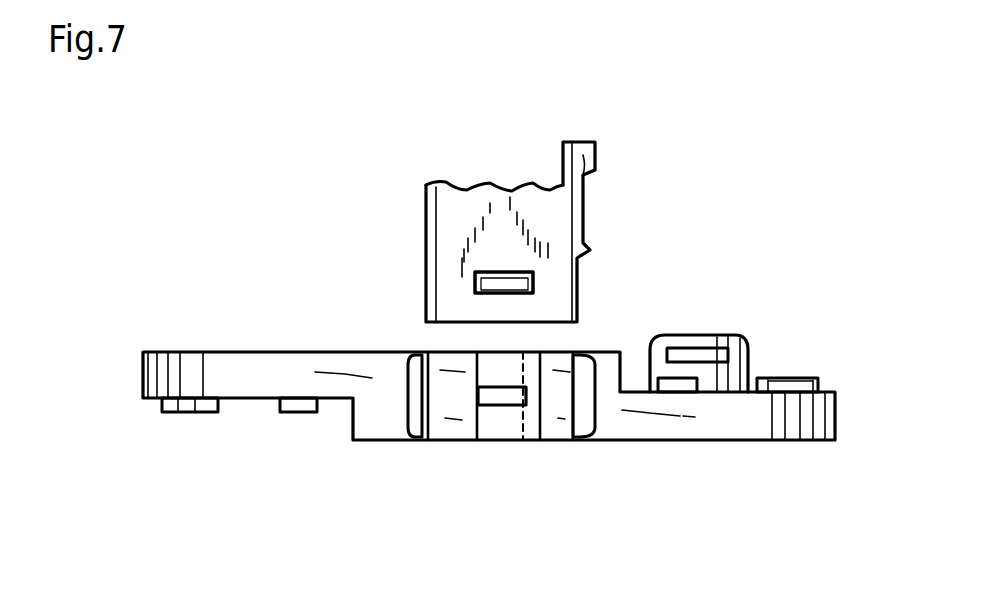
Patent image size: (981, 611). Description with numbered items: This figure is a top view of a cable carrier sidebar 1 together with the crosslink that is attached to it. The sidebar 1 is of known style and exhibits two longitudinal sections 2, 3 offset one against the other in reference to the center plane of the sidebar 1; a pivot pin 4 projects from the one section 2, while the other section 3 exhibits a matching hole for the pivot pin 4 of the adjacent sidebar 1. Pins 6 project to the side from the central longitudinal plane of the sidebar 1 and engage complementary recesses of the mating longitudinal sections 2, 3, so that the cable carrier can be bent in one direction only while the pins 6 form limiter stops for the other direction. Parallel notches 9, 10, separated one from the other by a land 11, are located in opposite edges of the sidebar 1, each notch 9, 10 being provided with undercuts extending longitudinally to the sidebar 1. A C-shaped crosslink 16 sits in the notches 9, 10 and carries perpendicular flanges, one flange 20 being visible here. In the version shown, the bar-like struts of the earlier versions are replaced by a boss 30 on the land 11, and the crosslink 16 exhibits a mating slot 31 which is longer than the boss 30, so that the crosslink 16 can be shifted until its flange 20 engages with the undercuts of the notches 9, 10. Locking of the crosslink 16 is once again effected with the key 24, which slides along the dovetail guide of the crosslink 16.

The sidebar 1 is at (393, 358).
The longitudinal section 2 is at (213, 358).
The longitudinal section 3 is at (762, 413).
The pivot pin 4 is at (728, 373).
The pin 6 is at (197, 413).
The notch 9 is at (556, 410).
The notch 10 is at (448, 410).
The land 11 is at (515, 425).
The crosslink 16 is at (493, 210).
The flange 20 is at (427, 218).
The key 24 is at (598, 152).
The boss 30 is at (497, 392).
The slot 31 is at (516, 283).